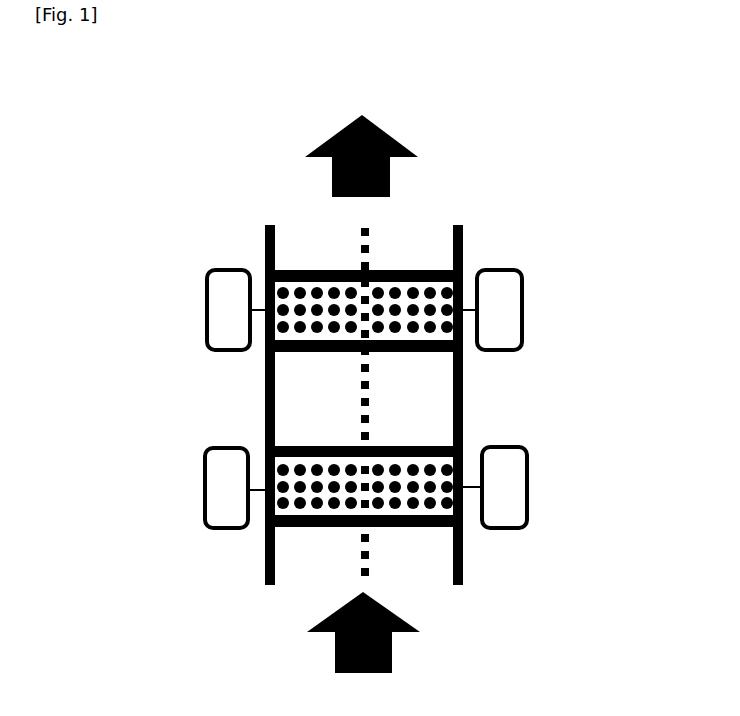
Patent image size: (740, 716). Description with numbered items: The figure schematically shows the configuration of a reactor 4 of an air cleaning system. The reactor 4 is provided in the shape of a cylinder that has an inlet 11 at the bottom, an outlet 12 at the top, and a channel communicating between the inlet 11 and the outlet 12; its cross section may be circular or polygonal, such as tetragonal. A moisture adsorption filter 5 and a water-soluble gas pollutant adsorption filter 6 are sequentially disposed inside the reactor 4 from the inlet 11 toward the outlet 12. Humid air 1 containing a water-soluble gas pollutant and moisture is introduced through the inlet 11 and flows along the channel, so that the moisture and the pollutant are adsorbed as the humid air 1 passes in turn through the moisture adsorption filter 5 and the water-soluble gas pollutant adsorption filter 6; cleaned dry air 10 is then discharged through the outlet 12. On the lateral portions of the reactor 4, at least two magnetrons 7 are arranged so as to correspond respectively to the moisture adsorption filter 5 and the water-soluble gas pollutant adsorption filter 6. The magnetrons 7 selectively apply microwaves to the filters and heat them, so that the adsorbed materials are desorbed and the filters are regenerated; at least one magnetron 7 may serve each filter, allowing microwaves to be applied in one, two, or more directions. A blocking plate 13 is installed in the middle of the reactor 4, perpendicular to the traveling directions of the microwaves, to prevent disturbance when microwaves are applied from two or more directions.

The humid air 1 is at (363, 669).
The reactor 4 is at (463, 394).
The moisture adsorption filter 5 is at (300, 505).
The water-soluble gas pollutant adsorption filter 6 is at (283, 291).
The magnetron 7 is at (215, 485).
The dry air 10 is at (361, 125).
The inlet 11 is at (363, 606).
The outlet 12 is at (347, 239).
The blocking plate 13 is at (370, 386).